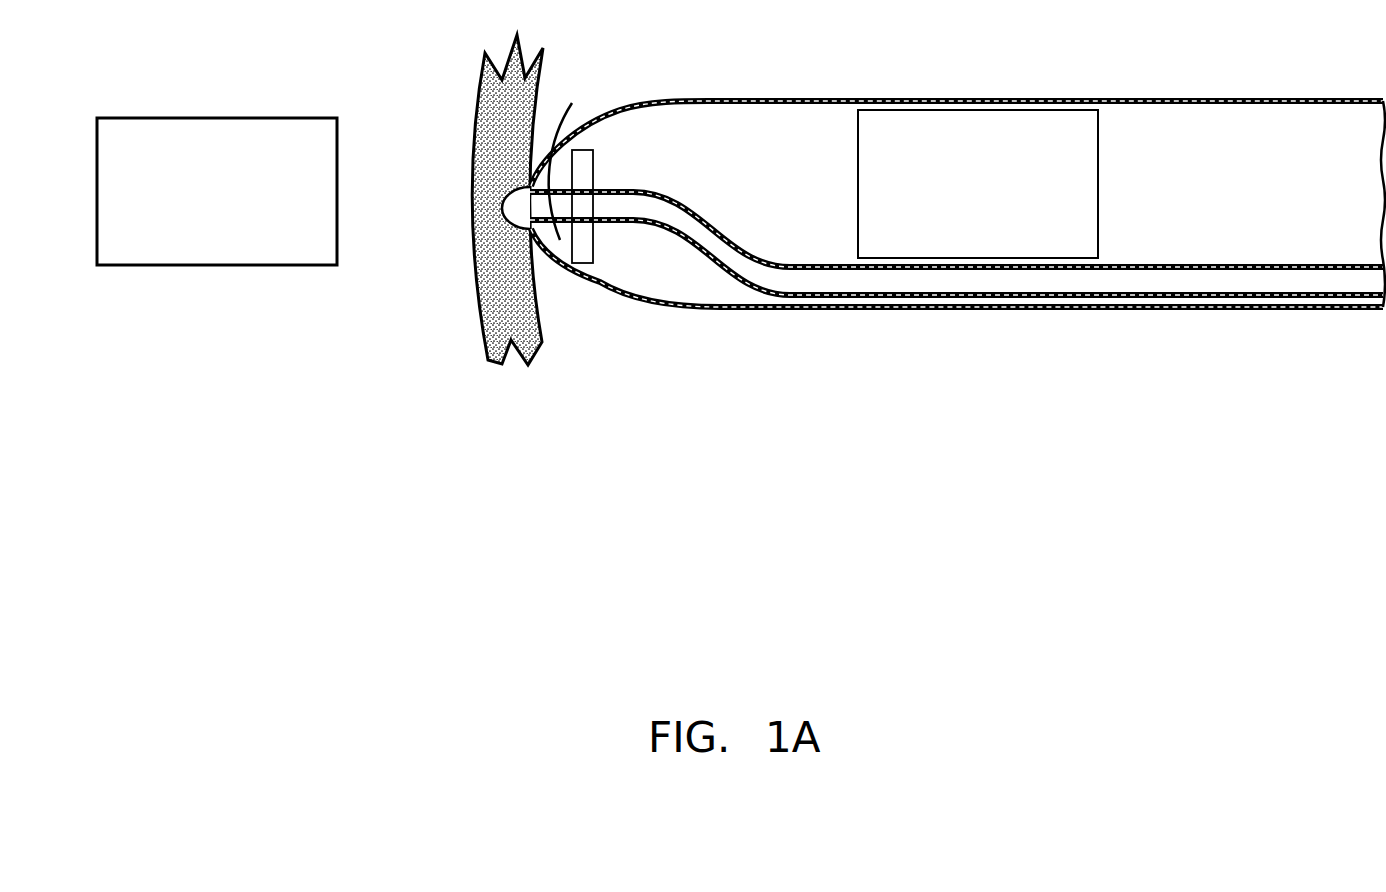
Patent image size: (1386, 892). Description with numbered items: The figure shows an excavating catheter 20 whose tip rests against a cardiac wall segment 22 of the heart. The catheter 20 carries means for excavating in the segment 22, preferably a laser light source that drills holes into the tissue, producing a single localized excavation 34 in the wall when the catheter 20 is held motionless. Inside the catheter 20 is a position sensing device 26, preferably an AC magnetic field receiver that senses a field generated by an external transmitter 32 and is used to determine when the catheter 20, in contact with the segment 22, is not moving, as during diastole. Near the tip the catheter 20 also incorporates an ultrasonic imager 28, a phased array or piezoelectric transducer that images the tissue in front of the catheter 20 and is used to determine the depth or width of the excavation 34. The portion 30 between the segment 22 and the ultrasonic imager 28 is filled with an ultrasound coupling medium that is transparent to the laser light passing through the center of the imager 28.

The excavating catheter 20 is at (1075, 311).
The cardiac wall segment 22 is at (473, 159).
The position sensing device 26 is at (912, 109).
The ultrasonic imager 28 is at (593, 153).
The portion between segment and ultrasonic imager 30 is at (568, 158).
The transmitter 32 is at (217, 191).
The excavation 34 is at (502, 211).